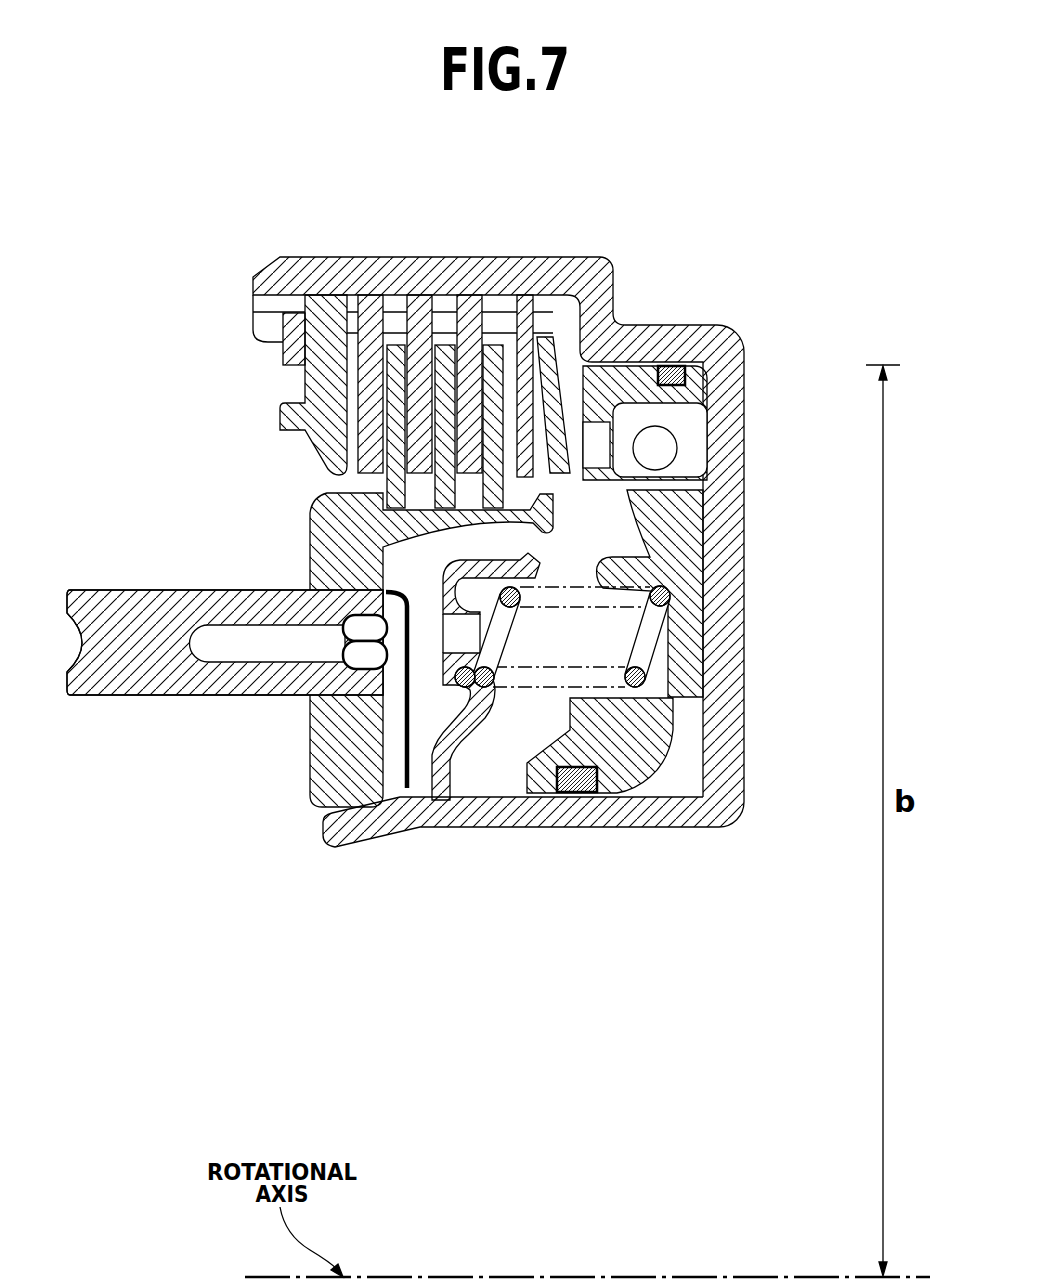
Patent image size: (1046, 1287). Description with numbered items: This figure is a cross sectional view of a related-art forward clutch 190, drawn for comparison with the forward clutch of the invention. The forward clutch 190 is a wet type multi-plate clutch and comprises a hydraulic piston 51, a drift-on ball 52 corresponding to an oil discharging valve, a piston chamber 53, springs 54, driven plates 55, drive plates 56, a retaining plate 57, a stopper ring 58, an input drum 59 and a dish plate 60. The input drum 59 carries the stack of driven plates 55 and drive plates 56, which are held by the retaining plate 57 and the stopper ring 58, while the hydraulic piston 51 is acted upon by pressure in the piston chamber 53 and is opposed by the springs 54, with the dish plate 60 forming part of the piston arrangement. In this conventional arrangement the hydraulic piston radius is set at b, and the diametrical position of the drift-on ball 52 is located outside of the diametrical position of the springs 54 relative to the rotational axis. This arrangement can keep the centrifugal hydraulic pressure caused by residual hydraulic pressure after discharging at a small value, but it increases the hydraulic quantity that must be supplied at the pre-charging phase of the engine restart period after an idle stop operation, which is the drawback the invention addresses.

The forward clutch 190 is at (448, 497).
The input drum 59 is at (290, 259).
The driven plates 55 is at (414, 298).
The dish plate 60 is at (583, 348).
The drift-on ball 52 is at (713, 398).
The stopper ring 58 is at (290, 344).
The retaining plate 57 is at (290, 418).
The drive plates 56 is at (327, 503).
The springs 54 is at (662, 632).
The hydraulic piston 51 is at (620, 722).
The piston chamber 53 is at (667, 774).